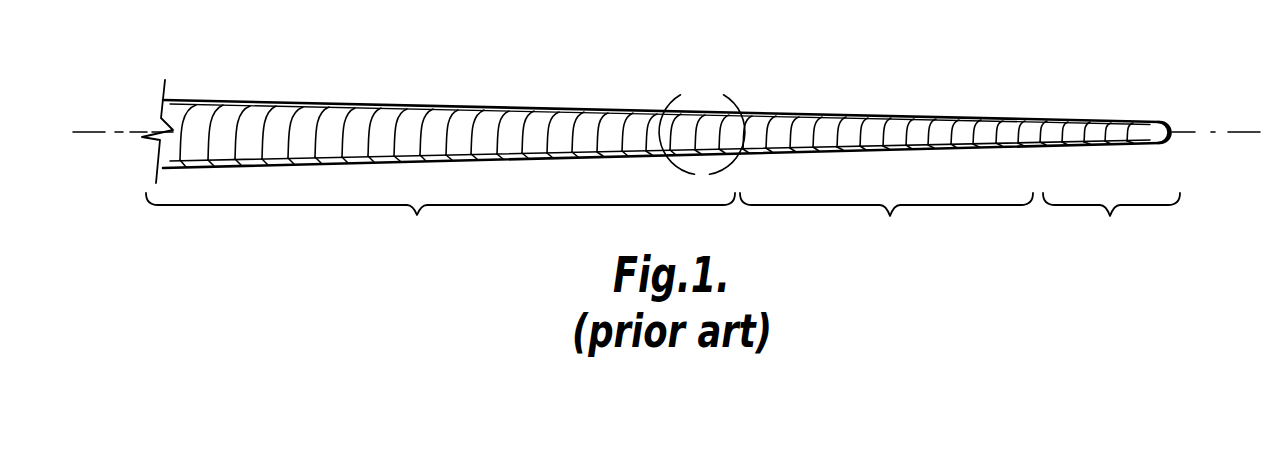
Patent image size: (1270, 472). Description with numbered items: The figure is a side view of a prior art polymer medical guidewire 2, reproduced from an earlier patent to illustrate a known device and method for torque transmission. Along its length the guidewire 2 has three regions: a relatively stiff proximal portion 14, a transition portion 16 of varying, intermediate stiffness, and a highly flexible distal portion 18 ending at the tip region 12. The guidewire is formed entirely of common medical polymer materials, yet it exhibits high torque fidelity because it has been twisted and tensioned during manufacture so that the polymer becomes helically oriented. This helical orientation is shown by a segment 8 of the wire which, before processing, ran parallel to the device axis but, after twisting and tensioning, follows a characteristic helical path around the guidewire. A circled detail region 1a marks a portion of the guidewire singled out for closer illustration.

The guidewire 2 is at (1008, 92).
The segment 8 is at (345, 108).
The detail region 1a is at (702, 123).
The distal tip 12 is at (1200, 131).
The proximal portion 14 is at (440, 223).
The transition portion 16 is at (886, 223).
The distal portion 18 is at (1111, 223).